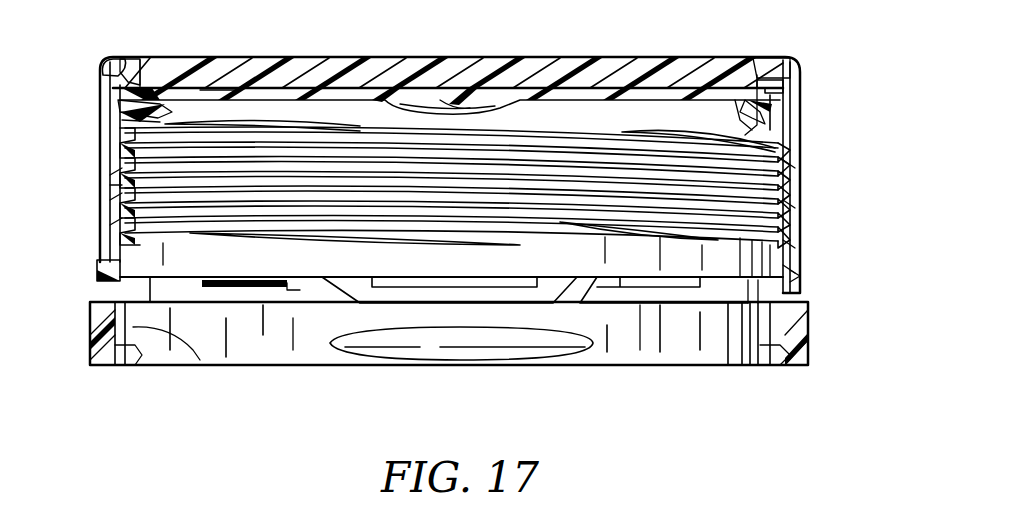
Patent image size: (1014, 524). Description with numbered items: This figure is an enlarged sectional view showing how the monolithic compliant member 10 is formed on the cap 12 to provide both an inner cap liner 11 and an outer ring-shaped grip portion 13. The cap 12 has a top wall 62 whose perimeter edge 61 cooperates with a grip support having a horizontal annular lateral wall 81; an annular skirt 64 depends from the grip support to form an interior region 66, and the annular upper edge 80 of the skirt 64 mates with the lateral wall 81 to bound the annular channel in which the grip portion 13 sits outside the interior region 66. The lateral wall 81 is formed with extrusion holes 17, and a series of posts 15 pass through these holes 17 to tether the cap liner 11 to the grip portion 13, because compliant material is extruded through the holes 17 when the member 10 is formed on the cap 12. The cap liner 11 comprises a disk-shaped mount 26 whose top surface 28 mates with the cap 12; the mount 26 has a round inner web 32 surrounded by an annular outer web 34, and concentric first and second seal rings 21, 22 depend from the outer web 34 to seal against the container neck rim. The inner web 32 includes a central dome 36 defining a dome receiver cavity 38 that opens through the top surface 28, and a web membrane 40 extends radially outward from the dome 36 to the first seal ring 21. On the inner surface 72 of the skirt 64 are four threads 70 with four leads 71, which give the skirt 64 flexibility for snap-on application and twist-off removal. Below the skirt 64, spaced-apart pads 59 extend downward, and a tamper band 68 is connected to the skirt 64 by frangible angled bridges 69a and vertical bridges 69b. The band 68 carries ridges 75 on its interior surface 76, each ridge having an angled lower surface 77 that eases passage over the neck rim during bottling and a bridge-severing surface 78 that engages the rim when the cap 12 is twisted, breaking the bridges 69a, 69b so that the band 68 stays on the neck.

The monolithic compliant member 10 is at (265, 112).
The cap liner 11 is at (570, 98).
The cap 12 is at (730, 58).
The grip portion 13 is at (104, 62).
The post 15 is at (768, 88).
The hole 17 is at (752, 88).
The first seal ring 21 is at (168, 102).
The second seal ring 22 is at (112, 98).
The mount 26 is at (358, 112).
The top surface 28 is at (228, 92).
The round inner web 32 is at (285, 99).
The annular outer web 34 is at (150, 90).
The central dome 36 is at (506, 100).
The dome receiver cavity 38 is at (455, 100).
The web membrane 40 is at (625, 80).
The pad 59 is at (267, 285).
The perimeter edge 61 is at (137, 70).
The top wall 62 is at (325, 58).
The annular skirt 64 is at (97, 190).
The interior region 66 is at (235, 108).
The tamper band 68 is at (84, 362).
The angled bridge 69a is at (337, 283).
The vertical bridge 69b is at (143, 296).
The thread 70 is at (392, 236).
The lead 71 is at (510, 238).
The inner surface 72 is at (792, 275).
The ridge 75 is at (507, 350).
The interior surface 76 is at (627, 350).
The angled lower surface 77 is at (122, 340).
The bridge-severing surface 78 is at (203, 364).
The upper edge 80 is at (103, 78).
The annular lateral wall 81 is at (128, 63).